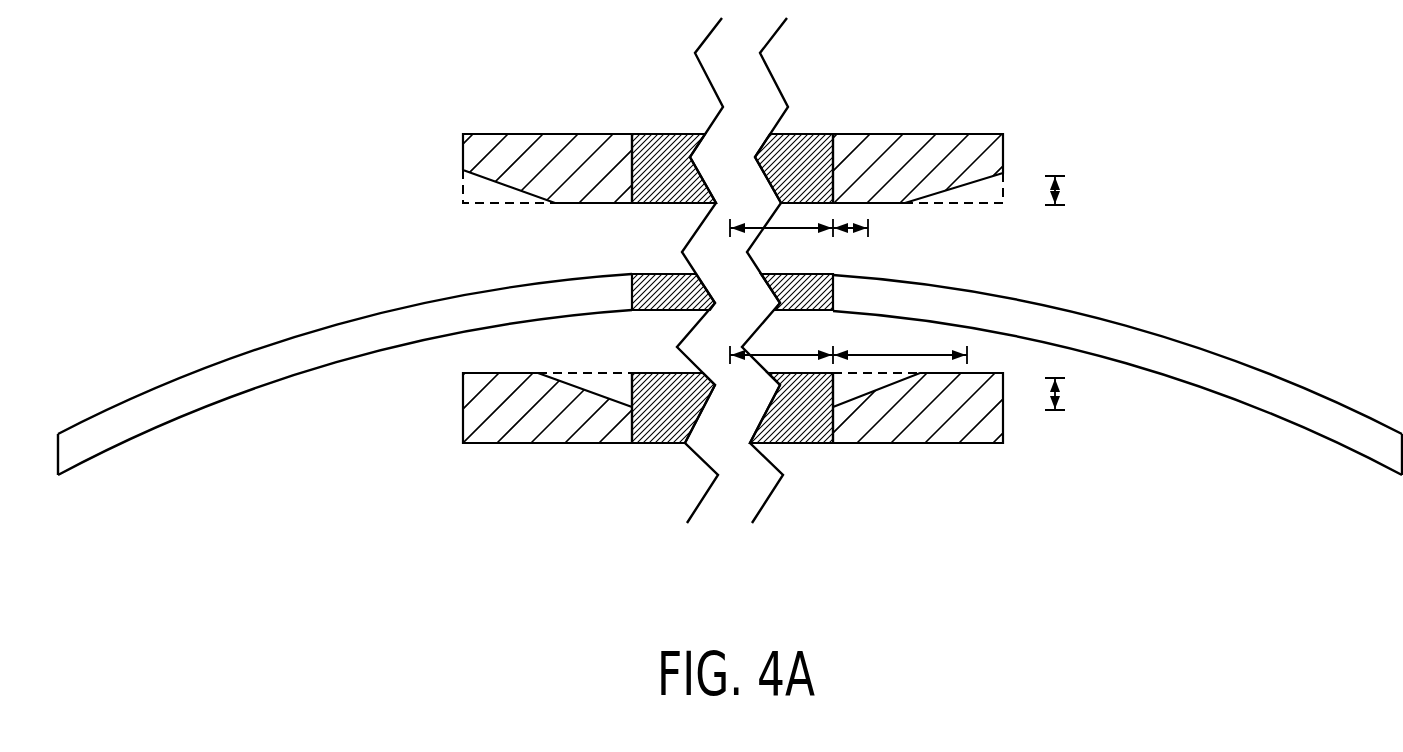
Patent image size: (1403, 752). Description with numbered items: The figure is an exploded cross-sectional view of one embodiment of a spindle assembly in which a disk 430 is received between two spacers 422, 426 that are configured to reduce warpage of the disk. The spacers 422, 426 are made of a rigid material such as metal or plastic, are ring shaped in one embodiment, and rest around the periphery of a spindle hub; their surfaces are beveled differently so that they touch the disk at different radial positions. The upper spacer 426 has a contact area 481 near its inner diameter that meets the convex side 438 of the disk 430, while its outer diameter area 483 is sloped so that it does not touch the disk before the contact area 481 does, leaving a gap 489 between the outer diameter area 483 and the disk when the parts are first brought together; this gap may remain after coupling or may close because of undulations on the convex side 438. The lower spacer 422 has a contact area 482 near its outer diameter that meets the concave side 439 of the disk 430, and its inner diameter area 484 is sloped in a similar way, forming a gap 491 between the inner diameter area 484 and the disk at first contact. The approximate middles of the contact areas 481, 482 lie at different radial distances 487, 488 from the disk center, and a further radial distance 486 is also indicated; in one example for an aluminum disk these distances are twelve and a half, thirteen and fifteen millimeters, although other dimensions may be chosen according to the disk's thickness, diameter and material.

The spacer 422 is at (947, 426).
The spacer 426 is at (921, 184).
The disk 430 is at (1323, 414).
The convex side 438 is at (1220, 340).
The concave side 439 is at (1230, 415).
The contact area 481 is at (628, 209).
The contact area 482 is at (527, 370).
The outer diameter area 483 is at (480, 201).
The inner diameter area 484 is at (597, 384).
The radial distance 486 is at (784, 232).
The radial distance 487 is at (840, 232).
The radial distance 488 is at (865, 354).
The gap 489 is at (1062, 192).
The gap 491 is at (1062, 396).